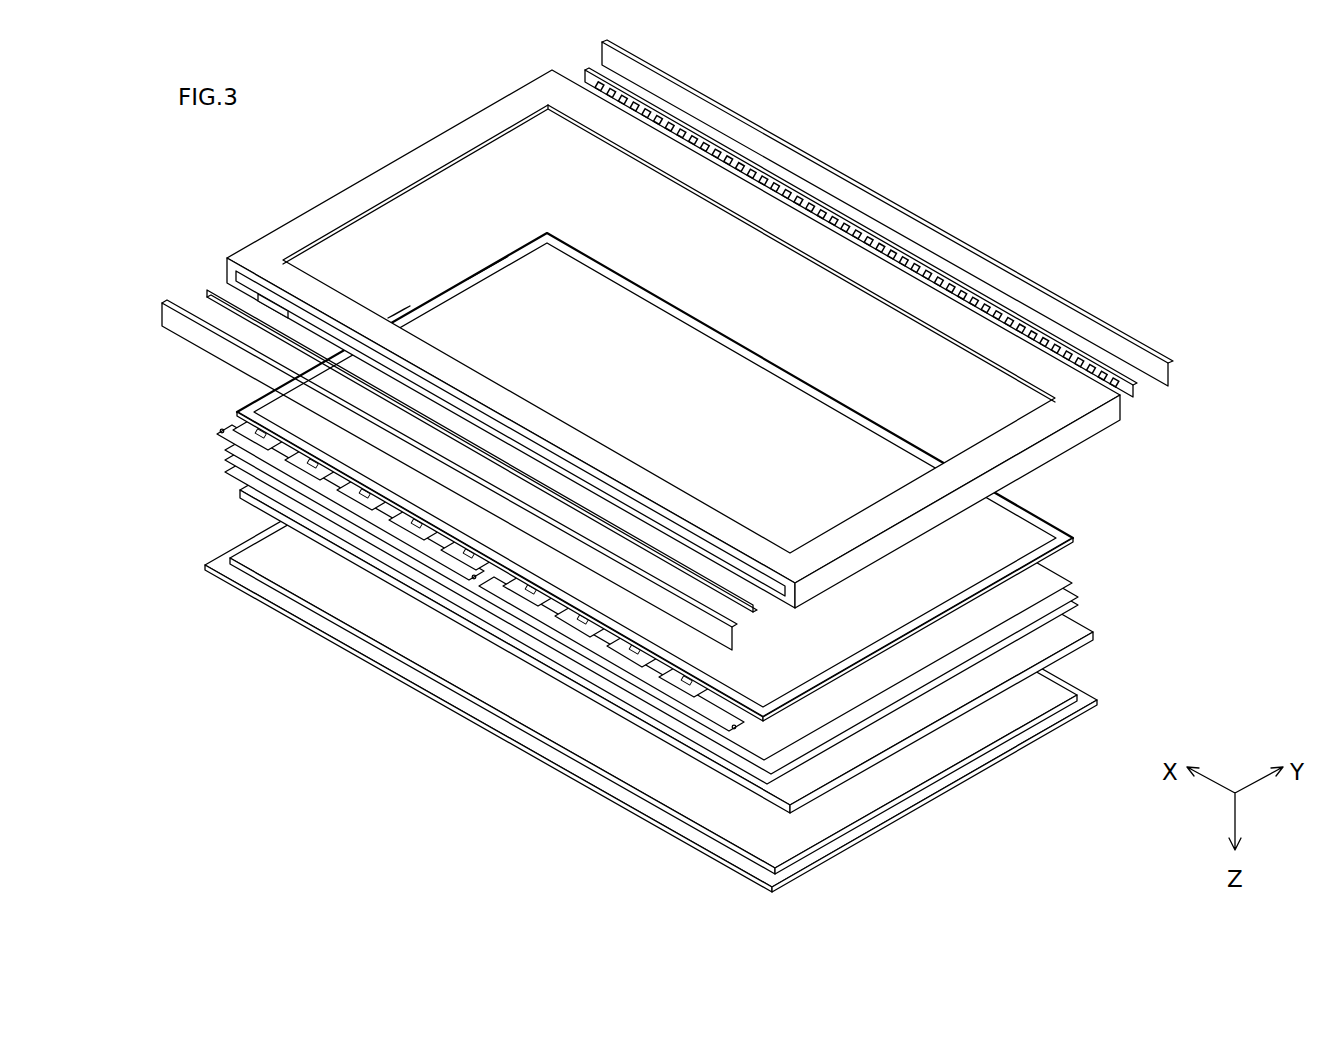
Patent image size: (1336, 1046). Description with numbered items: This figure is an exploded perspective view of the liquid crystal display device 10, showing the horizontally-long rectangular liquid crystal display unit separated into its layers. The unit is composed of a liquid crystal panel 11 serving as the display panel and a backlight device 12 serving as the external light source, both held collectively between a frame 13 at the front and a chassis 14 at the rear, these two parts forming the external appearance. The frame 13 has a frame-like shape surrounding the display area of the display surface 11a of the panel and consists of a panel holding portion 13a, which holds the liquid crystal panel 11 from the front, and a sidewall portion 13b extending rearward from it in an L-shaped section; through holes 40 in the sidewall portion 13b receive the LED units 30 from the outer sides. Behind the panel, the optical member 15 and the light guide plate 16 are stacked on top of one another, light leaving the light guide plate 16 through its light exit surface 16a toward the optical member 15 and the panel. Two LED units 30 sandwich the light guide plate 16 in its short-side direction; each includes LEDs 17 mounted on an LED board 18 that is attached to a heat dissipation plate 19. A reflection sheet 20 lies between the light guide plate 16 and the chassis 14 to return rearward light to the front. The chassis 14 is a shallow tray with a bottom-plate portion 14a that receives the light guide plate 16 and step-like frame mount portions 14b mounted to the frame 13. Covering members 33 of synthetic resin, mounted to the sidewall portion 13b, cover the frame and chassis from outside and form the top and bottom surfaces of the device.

The liquid crystal display device 10 is at (991, 107).
The liquid crystal panel 11 is at (658, 290).
The display surface 11a is at (673, 365).
The backlight device 12 is at (412, 741).
The frame 13 is at (377, 173).
The panel holding portion 13a is at (448, 148).
The sidewall portion 13b is at (227, 273).
The chassis 14 is at (237, 590).
The bottom-plate portion 14a is at (430, 645).
The frame mount portions 14b is at (320, 622).
The optical member 15 is at (1074, 576).
The light guide plate 16 is at (958, 710).
The light exit surface 16a is at (995, 672).
The LEDs 17 is at (1060, 357).
The LED board 18 is at (1112, 390).
The heat dissipation plate 19 is at (1135, 392).
The reflection sheet 20 is at (1078, 652).
The LED units 30 is at (1216, 384).
The covering members 33 is at (975, 252).
The through holes 40 is at (283, 302).